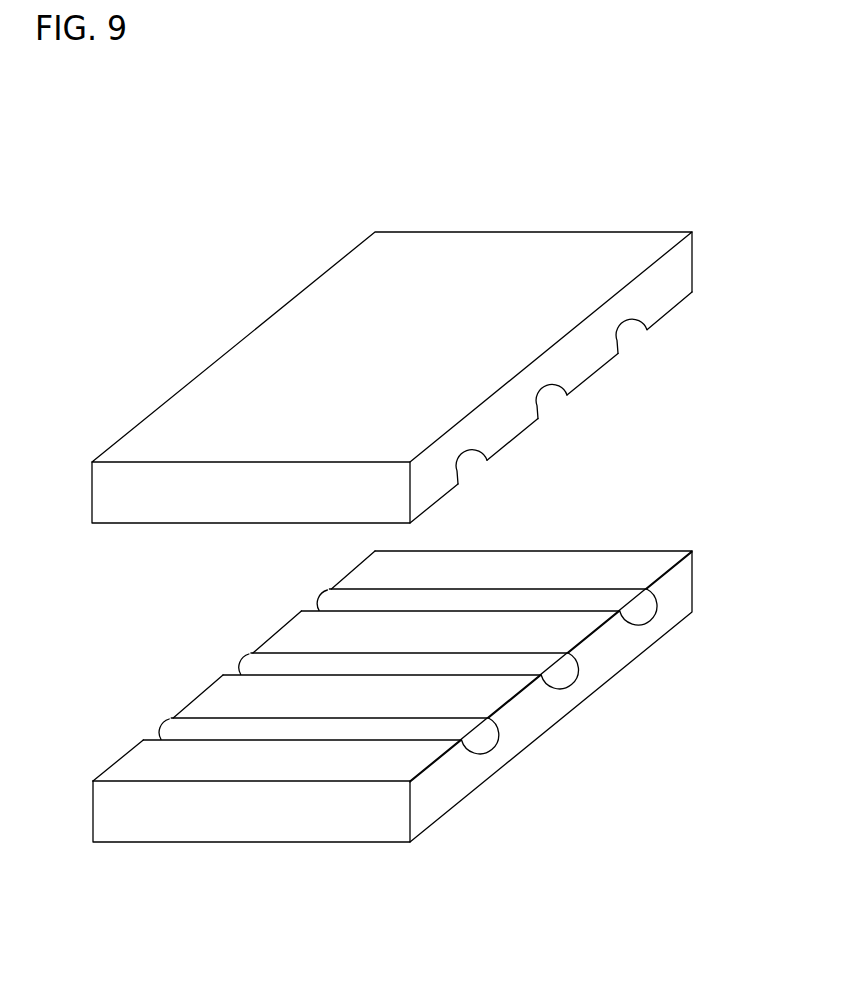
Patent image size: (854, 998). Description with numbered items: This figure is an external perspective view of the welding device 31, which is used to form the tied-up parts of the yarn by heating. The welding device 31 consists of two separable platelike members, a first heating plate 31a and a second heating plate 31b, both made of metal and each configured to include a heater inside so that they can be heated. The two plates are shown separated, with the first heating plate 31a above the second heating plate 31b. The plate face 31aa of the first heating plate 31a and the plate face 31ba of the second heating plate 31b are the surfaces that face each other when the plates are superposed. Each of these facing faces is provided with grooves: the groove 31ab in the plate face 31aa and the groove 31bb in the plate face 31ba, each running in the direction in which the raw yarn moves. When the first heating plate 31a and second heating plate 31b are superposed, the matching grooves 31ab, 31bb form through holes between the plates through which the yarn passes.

The welding device 31 is at (153, 167).
The first heating plate 31a is at (483, 198).
The plate face 31aa is at (662, 323).
The groove 31ab is at (470, 467).
The second heating plate 31b is at (647, 513).
The plate face 31ba is at (585, 568).
The groove 31bb is at (357, 604).